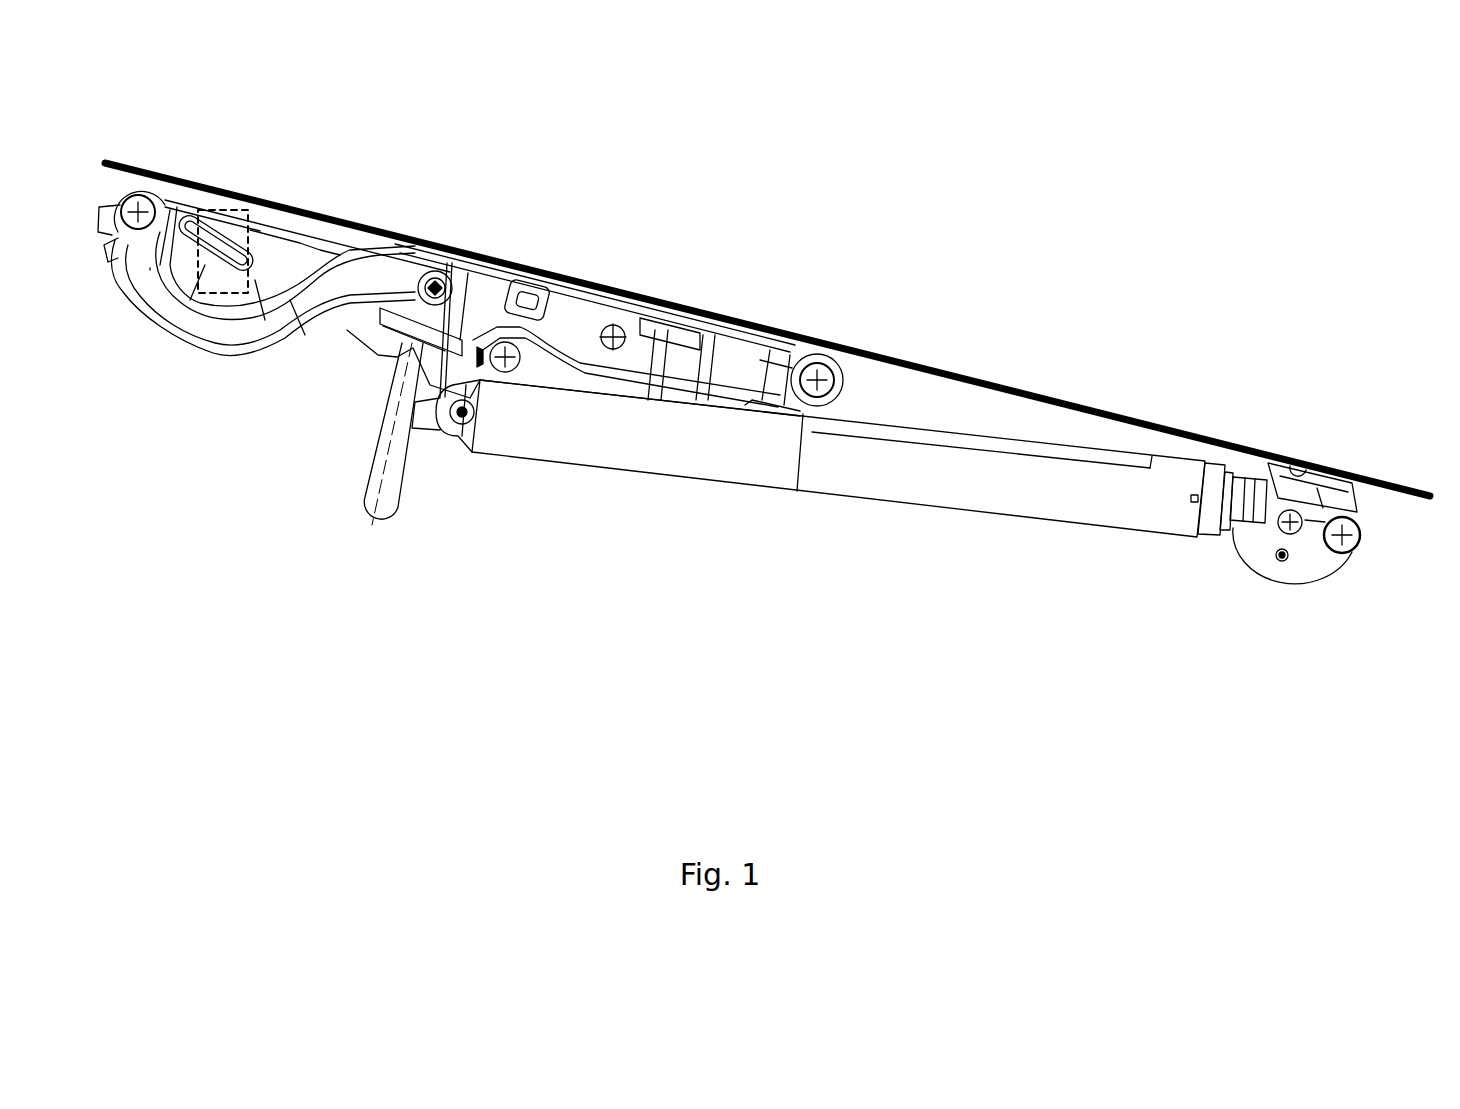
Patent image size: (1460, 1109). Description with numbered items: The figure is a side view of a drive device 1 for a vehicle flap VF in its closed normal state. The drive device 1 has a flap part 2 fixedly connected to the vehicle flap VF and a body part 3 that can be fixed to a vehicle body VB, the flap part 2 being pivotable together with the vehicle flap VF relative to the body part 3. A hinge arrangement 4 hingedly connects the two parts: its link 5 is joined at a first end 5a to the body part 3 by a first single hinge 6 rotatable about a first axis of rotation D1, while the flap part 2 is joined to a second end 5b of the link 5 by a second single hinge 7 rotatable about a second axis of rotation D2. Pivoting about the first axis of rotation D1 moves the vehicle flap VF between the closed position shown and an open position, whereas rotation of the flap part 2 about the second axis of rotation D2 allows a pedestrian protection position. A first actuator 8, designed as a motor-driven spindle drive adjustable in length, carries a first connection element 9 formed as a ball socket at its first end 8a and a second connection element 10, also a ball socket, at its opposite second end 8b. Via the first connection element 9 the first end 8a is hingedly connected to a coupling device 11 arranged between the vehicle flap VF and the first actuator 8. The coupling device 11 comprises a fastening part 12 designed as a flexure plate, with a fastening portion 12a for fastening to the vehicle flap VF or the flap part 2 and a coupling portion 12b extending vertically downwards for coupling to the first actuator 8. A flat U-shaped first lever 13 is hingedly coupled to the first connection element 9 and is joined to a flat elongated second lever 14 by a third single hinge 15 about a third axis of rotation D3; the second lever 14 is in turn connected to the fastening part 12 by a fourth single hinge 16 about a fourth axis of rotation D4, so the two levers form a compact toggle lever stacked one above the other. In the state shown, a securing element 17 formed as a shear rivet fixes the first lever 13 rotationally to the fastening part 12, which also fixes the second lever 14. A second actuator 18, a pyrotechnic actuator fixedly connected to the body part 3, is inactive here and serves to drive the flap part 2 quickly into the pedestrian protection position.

The drive device 1 is at (714, 590).
The flap part 2 is at (514, 278).
The body part 3 is at (272, 250).
The hinge arrangement 4 is at (295, 390).
The link 5 is at (248, 330).
The first end 5a is at (150, 270).
The second end 5b is at (782, 385).
The first single hinge 6 is at (112, 262).
The second single hinge 7 is at (841, 378).
The first actuator 8 is at (838, 500).
The first end 8a is at (1172, 517).
The second end 8b is at (510, 428).
The first connection element 9 is at (1222, 530).
The second connection element 10 is at (447, 435).
The coupling device 11 is at (1291, 495).
The fastening part 12 is at (1308, 387).
The fastening portion 12a is at (1300, 475).
The coupling portion 12b is at (1305, 490).
The first lever 13 is at (1322, 570).
The second lever 14 is at (1322, 520).
The third single hinge 15 is at (1354, 545).
The fourth single hinge 16 is at (1278, 488).
The securing element 17 is at (1281, 562).
The second actuator 18 is at (385, 445).
The first axis of rotation D1 is at (138, 212).
The second axis of rotation D2 is at (817, 380).
The third axis of rotation D3 is at (1342, 535).
The fourth axis of rotation D4 is at (1290, 523).
The vehicle body VB is at (230, 215).
The vehicle flap VF is at (1053, 398).